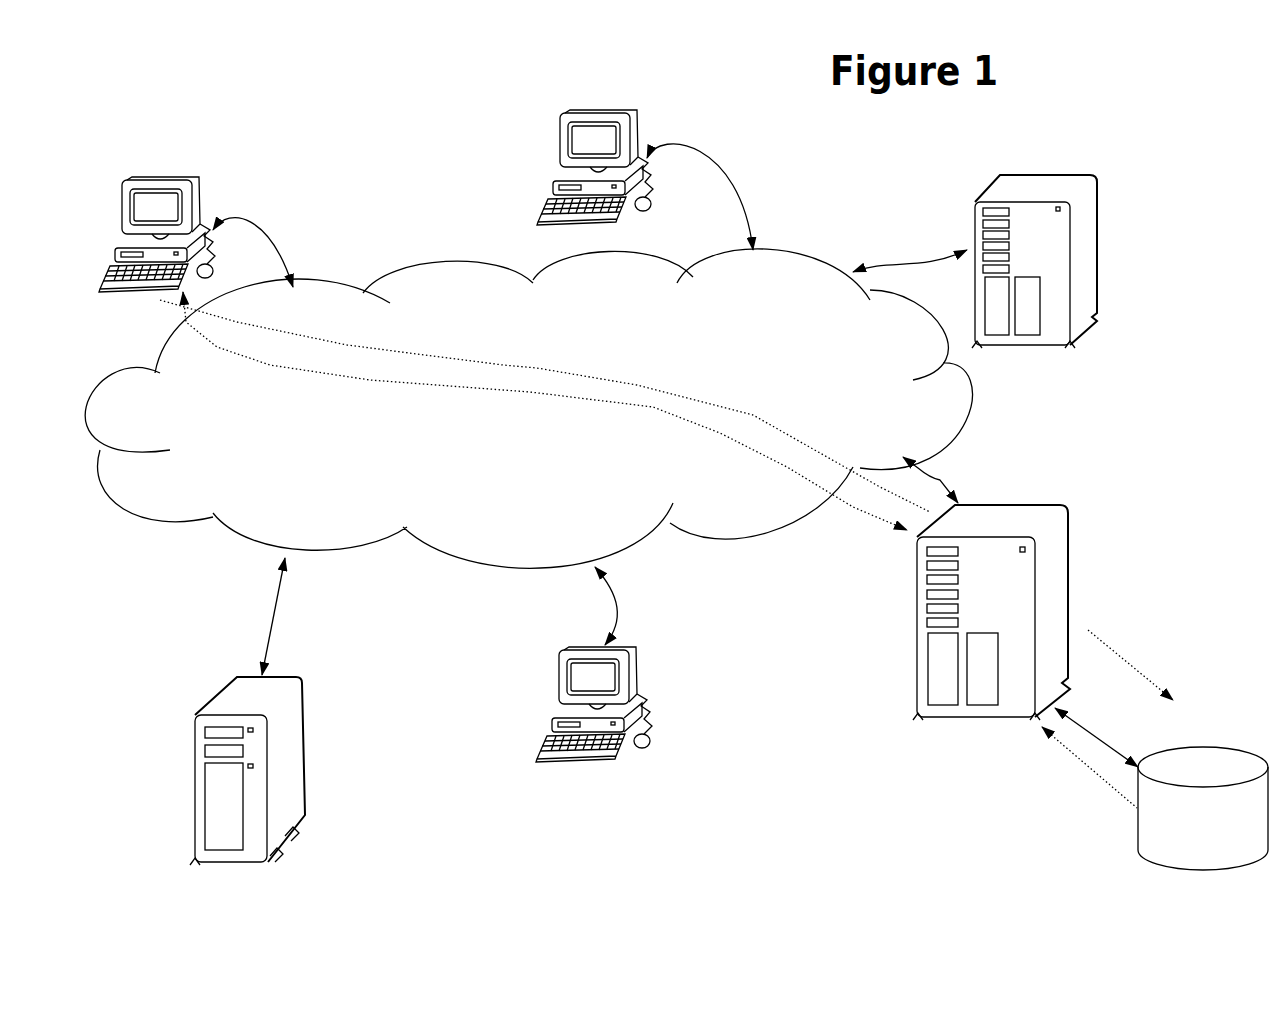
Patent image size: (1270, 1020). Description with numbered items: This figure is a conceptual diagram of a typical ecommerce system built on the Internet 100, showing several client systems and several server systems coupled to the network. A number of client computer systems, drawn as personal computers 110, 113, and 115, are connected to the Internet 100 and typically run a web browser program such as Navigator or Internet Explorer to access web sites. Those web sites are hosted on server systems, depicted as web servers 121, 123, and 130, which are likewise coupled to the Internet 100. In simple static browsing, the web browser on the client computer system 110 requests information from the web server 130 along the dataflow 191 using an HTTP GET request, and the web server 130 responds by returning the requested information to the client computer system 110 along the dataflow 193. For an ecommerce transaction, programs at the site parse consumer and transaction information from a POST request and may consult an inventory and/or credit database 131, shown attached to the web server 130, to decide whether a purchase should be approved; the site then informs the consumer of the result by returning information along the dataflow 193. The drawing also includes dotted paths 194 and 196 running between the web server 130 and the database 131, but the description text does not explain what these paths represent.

The Internet 100 is at (403, 485).
The personal computer 110 is at (198, 186).
The personal computer 113 is at (567, 673).
The personal computer 115 is at (573, 134).
The web server 121 is at (298, 758).
The web server 123 is at (1090, 303).
The web server 130 is at (995, 517).
The inventory and/or credit database 131 is at (1203, 808).
The dataflow 191 is at (545, 411).
The dataflow 193 is at (545, 406).
The communication path 194 is at (1130, 665).
The communication path 196 is at (1089, 767).